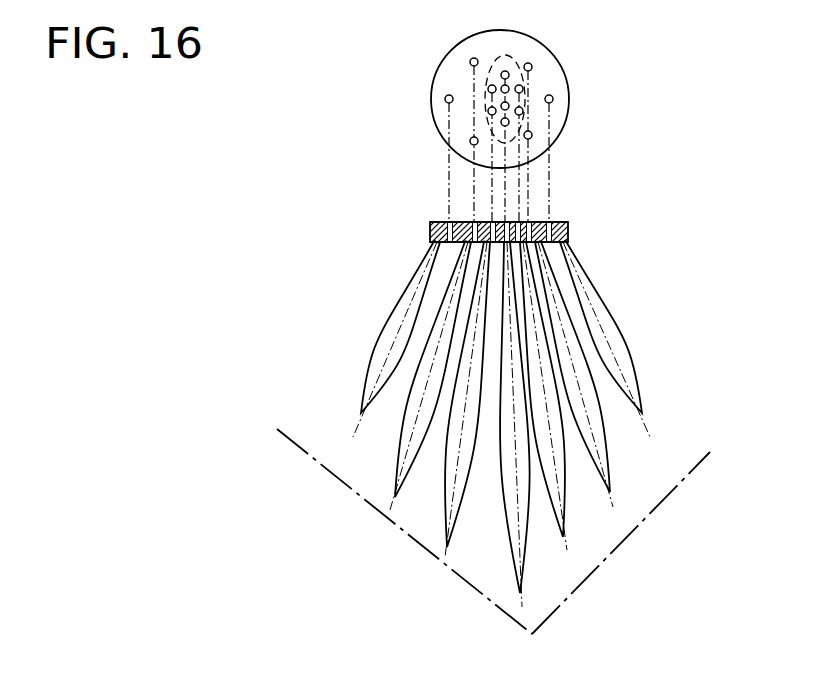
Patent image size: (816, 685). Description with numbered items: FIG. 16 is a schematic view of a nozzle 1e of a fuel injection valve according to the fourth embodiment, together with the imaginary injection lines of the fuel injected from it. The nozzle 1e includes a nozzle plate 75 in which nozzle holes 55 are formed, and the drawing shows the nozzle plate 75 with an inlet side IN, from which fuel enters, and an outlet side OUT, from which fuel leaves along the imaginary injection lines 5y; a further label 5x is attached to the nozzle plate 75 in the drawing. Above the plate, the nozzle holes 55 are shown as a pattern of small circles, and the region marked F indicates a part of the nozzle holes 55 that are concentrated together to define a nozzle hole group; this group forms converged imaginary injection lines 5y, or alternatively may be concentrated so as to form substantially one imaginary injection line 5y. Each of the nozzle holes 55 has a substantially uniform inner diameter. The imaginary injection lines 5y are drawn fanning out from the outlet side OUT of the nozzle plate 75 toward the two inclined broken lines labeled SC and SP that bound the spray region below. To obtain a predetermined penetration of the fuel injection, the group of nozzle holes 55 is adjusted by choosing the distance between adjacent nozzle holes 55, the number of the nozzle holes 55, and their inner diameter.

The nozzle 1e is at (597, 90).
The nozzle hole group F is at (522, 62).
The nozzle holes 55 is at (446, 97).
The lens array plate 5x is at (574, 232).
The nozzle plate 75 is at (415, 237).
The input side IN is at (570, 198).
The output side OUT is at (581, 265).
The imaginary injection lines 5y is at (352, 430).
The screen / scan plane SC is at (412, 535).
The spot plane SP is at (618, 540).